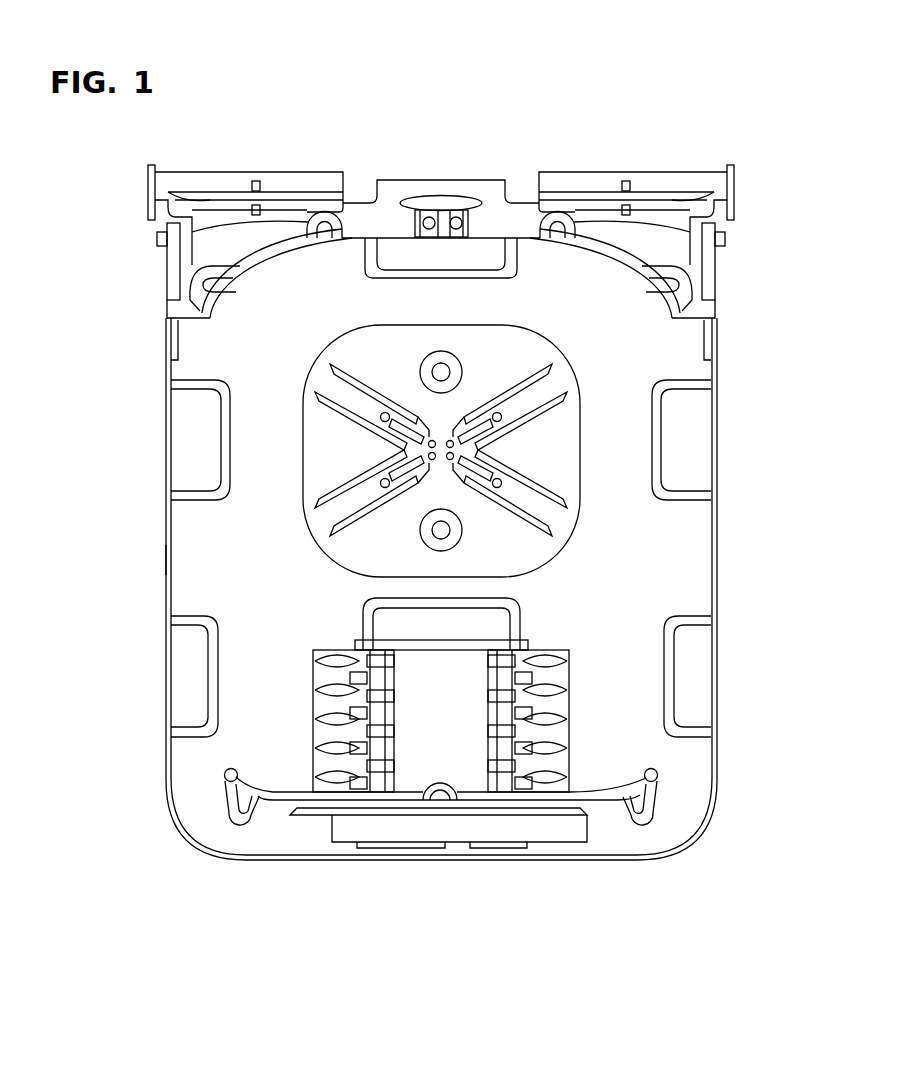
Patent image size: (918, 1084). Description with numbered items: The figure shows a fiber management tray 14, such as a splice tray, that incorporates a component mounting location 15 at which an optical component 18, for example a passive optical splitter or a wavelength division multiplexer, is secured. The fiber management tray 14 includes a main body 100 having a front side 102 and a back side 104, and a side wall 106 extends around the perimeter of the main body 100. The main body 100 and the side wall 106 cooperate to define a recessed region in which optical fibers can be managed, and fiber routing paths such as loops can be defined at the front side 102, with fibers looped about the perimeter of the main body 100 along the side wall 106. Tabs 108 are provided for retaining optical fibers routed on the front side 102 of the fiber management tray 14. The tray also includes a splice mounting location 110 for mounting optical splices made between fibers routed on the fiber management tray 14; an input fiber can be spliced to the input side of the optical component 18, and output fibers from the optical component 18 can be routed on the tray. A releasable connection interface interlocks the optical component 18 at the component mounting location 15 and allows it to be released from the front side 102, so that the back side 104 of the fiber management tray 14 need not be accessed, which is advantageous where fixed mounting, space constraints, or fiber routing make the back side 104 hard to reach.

The fiber management tray 14 is at (697, 127).
The component mounting location 15 is at (408, 869).
The optical component 18 is at (570, 835).
The main body 100 is at (660, 347).
The front side 102 is at (654, 582).
The back side 104 is at (158, 572).
The side wall 106 is at (720, 532).
The tabs 108 is at (182, 465).
The splice mounting location 110 is at (570, 768).